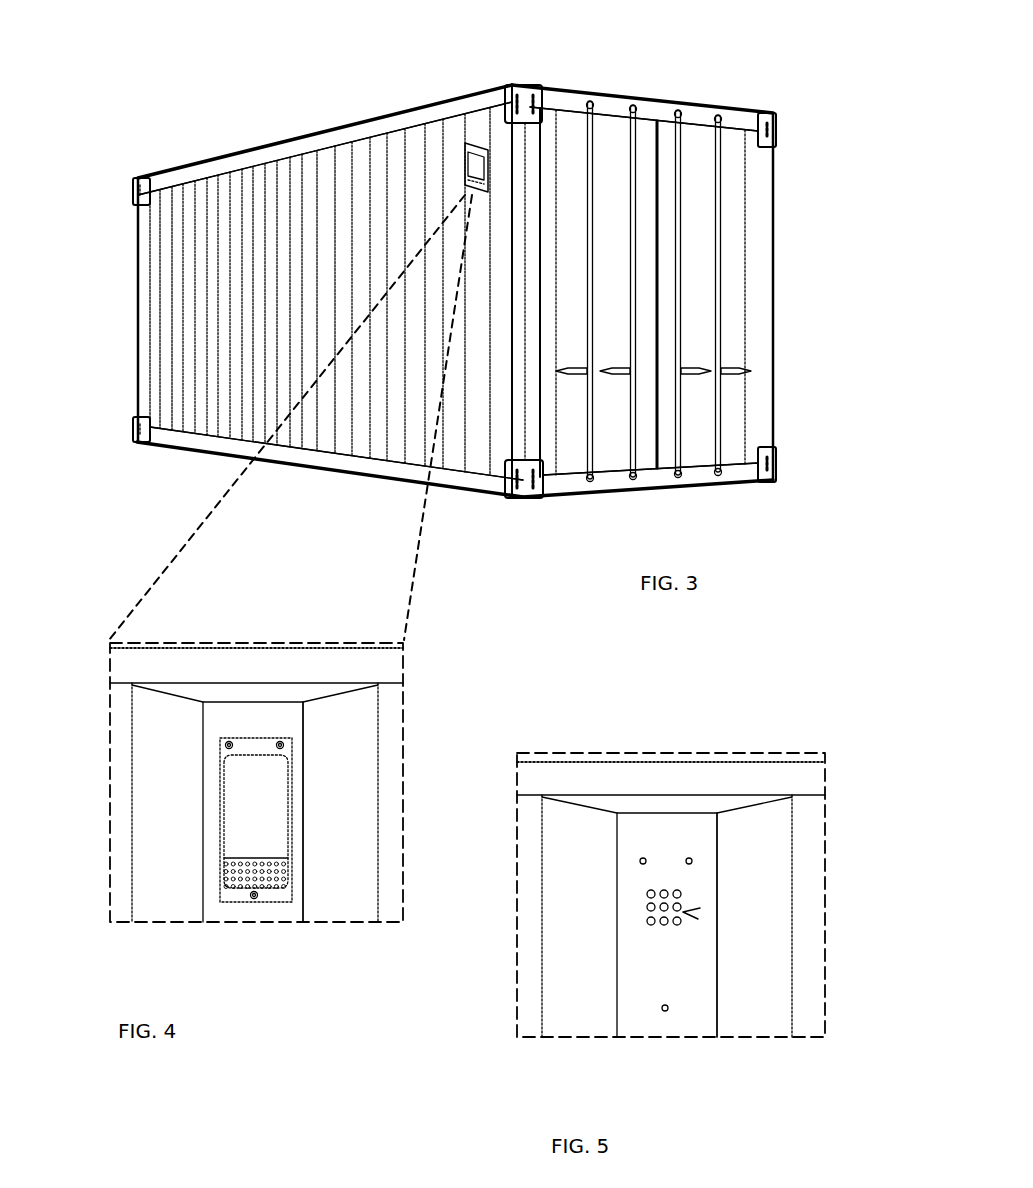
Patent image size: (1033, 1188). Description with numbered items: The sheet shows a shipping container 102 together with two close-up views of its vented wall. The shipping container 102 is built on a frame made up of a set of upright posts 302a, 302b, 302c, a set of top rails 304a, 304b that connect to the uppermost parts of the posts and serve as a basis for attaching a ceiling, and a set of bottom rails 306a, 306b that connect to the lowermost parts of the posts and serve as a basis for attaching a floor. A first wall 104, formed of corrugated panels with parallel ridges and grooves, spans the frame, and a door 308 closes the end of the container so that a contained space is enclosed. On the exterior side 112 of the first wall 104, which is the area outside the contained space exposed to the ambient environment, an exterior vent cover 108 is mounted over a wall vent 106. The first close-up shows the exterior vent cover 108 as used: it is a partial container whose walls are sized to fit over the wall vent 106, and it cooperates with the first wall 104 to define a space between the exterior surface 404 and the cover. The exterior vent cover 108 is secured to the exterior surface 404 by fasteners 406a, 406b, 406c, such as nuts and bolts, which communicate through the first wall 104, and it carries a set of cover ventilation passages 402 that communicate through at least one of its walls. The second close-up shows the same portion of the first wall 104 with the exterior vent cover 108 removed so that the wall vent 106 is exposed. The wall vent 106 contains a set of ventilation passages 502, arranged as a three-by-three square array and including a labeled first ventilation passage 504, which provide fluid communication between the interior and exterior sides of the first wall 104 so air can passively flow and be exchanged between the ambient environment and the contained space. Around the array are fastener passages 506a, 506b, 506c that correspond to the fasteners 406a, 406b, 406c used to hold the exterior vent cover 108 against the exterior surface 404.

In FIG. 3, the shipping container 102 is at (630, 95).
In FIG. 3, the first wall 104 is at (280, 192).
In FIG. 4, the first wall 104 is at (360, 770).
In FIG. 5, the first wall 104 is at (770, 817).
In FIG. 5, the wall vent 106 is at (653, 932).
In FIG. 3, the exterior vent cover 108 is at (465, 160).
In FIG. 4, the exterior vent cover 108 is at (237, 808).
In FIG. 3, the exterior side 112 is at (93, 319).
In FIG. 3, the post 302a is at (532, 155).
In FIG. 3, the post 302b is at (760, 330).
In FIG. 3, the post 302c is at (138, 297).
In FIG. 3, the top rail 304a is at (698, 118).
In FIG. 3, the top rail 304b is at (333, 142).
In FIG. 4, the top rail 304b is at (337, 668).
In FIG. 5, the top rail 304b is at (748, 778).
In FIG. 3, the bottom rail 306a is at (575, 483).
In FIG. 3, the bottom rail 306b is at (320, 457).
In FIG. 3, the door 308 is at (735, 235).
In FIG. 4, the cover ventilation passages 402 is at (278, 865).
In FIG. 4, the exterior surface 404 is at (181, 726).
In FIG. 5, the exterior surface 404 is at (594, 841).
In FIG. 4, the fastener 406a is at (255, 900).
In FIG. 4, the fastener 406b is at (228, 740).
In FIG. 4, the fastener 406c is at (281, 740).
In FIG. 5, the set of ventilation passages 502 is at (684, 912).
In FIG. 5, the first ventilation passage 504 is at (683, 891).
In FIG. 5, the fastener passage 506a is at (666, 1012).
In FIG. 5, the fastener passage 506b is at (642, 856).
In FIG. 5, the fastener passage 506c is at (690, 856).